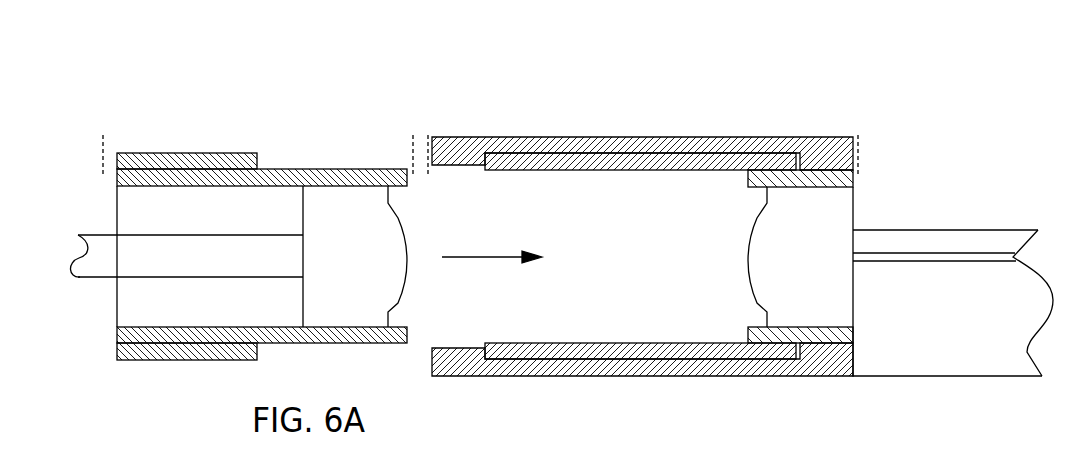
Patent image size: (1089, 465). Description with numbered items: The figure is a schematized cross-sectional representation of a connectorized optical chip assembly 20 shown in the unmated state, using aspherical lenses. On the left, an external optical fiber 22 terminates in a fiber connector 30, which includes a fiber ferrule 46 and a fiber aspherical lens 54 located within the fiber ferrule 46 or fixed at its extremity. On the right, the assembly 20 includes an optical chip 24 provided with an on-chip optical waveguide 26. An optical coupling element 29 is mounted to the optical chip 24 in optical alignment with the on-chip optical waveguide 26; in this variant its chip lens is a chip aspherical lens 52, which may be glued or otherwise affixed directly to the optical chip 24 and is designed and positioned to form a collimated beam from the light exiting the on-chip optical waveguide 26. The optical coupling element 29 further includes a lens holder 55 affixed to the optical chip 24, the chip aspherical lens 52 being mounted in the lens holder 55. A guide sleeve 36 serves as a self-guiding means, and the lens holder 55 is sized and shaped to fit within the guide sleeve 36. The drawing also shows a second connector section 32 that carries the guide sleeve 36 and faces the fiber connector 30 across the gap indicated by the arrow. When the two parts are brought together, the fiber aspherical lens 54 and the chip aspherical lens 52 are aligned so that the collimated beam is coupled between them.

The connectorized optical chip assembly 20 is at (1010, 125).
The external optical fiber 22 is at (102, 258).
The optical chip 24 is at (980, 357).
The on-chip optical waveguide 26 is at (942, 257).
The optical coupling element 29 is at (817, 83).
The fiber connector 30 is at (103, 128).
The second connector section 32 is at (858, 130).
The guide sleeve 36 is at (648, 350).
The fiber ferrule 46 is at (133, 211).
The chip aspherical lens 52 is at (763, 270).
The fiber aspherical lens 54 is at (382, 283).
The lens holder 55 is at (815, 333).